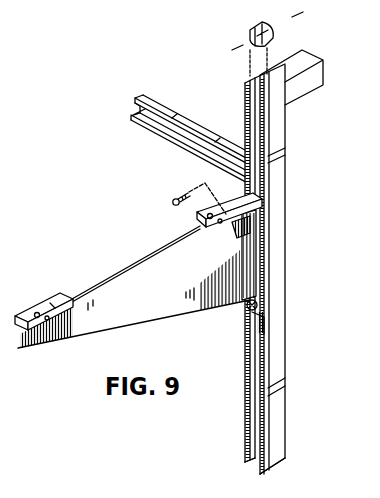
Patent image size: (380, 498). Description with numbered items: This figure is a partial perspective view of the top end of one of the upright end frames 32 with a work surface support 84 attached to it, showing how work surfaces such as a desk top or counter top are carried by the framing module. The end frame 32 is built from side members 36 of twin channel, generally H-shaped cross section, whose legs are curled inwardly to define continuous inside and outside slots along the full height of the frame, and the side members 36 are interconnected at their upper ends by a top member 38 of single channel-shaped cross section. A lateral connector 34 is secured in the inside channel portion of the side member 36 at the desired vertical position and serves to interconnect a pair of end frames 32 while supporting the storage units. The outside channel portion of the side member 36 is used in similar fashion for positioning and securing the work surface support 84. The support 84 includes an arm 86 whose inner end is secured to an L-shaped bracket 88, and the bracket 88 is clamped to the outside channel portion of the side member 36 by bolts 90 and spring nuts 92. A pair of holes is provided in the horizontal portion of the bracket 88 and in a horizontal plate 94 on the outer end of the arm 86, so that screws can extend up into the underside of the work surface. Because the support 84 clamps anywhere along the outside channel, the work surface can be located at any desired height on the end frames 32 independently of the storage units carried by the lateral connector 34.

The upright end frame 32 is at (283, 379).
The lateral connector 34 is at (187, 115).
The side member 36 is at (283, 455).
The top member 38 is at (302, 88).
The work surface support 84 is at (128, 267).
The arm 86 is at (163, 304).
The L-shaped bracket 88 is at (259, 244).
The bolt 90 is at (183, 196).
The spring nut 92 is at (249, 26).
The horizontal plate 94 is at (28, 312).